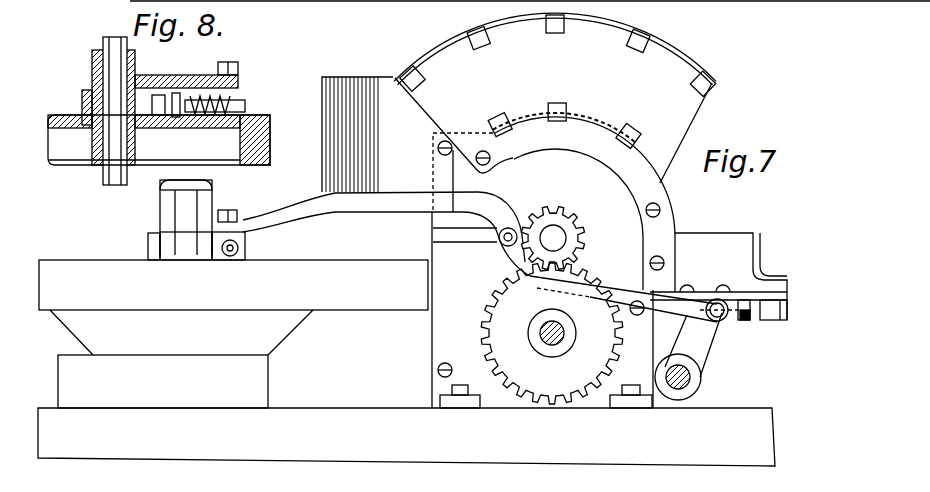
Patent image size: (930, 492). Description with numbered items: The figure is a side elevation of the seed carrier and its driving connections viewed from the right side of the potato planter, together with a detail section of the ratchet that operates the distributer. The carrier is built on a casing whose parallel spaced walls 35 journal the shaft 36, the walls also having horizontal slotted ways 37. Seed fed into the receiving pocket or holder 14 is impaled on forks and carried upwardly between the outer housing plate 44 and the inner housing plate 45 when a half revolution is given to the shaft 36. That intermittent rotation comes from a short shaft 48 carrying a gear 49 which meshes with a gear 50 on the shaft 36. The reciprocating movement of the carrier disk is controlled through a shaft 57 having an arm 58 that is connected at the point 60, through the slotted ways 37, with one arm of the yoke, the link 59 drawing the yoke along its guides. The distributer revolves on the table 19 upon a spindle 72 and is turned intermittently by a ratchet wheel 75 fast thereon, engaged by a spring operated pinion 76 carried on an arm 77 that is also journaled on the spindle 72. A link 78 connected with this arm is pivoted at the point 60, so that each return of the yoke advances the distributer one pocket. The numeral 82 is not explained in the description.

In FIG. 7, the receiving pocket or holder 14 is at (718, 276).
In FIG. 7, the table 19 is at (406, 388).
In FIG. 7, the casing walls 35 is at (556, 173).
In FIG. 7, the shaft 36 is at (555, 237).
In FIG. 7, the slotted ways 37 is at (542, 310).
In FIG. 7, the outer housing plate 44 is at (715, 57).
In FIG. 7, the inner housing plate 45 is at (665, 206).
In FIG. 7, the short shaft 48 is at (545, 325).
In FIG. 7, the gear 49 is at (529, 334).
In FIG. 7, the gear 50 is at (578, 250).
In FIG. 7, the shaft 57 is at (701, 376).
In FIG. 7, the arm 58 is at (698, 335).
In FIG. 7, the link 59 is at (635, 291).
In FIG. 7, the pivot point 60 is at (512, 228).
In FIG. 8, the spindle 72 is at (135, 53).
In FIG. 7, the spindle 72 is at (193, 215).
In FIG. 8, the ratchet wheel 75 is at (159, 140).
In FIG. 7, the ratchet wheel 75 is at (143, 242).
In FIG. 8, the spring operated pinion 76 is at (167, 98).
In FIG. 7, the spring operated pinion 76 is at (238, 247).
In FIG. 8, the arm 77 is at (207, 78).
In FIG. 7, the arm 77 is at (200, 228).
In FIG. 8, the link 78 is at (238, 68).
In FIG. 7, the link 78 is at (386, 234).
In FIG. 7, the block 82 is at (361, 134).